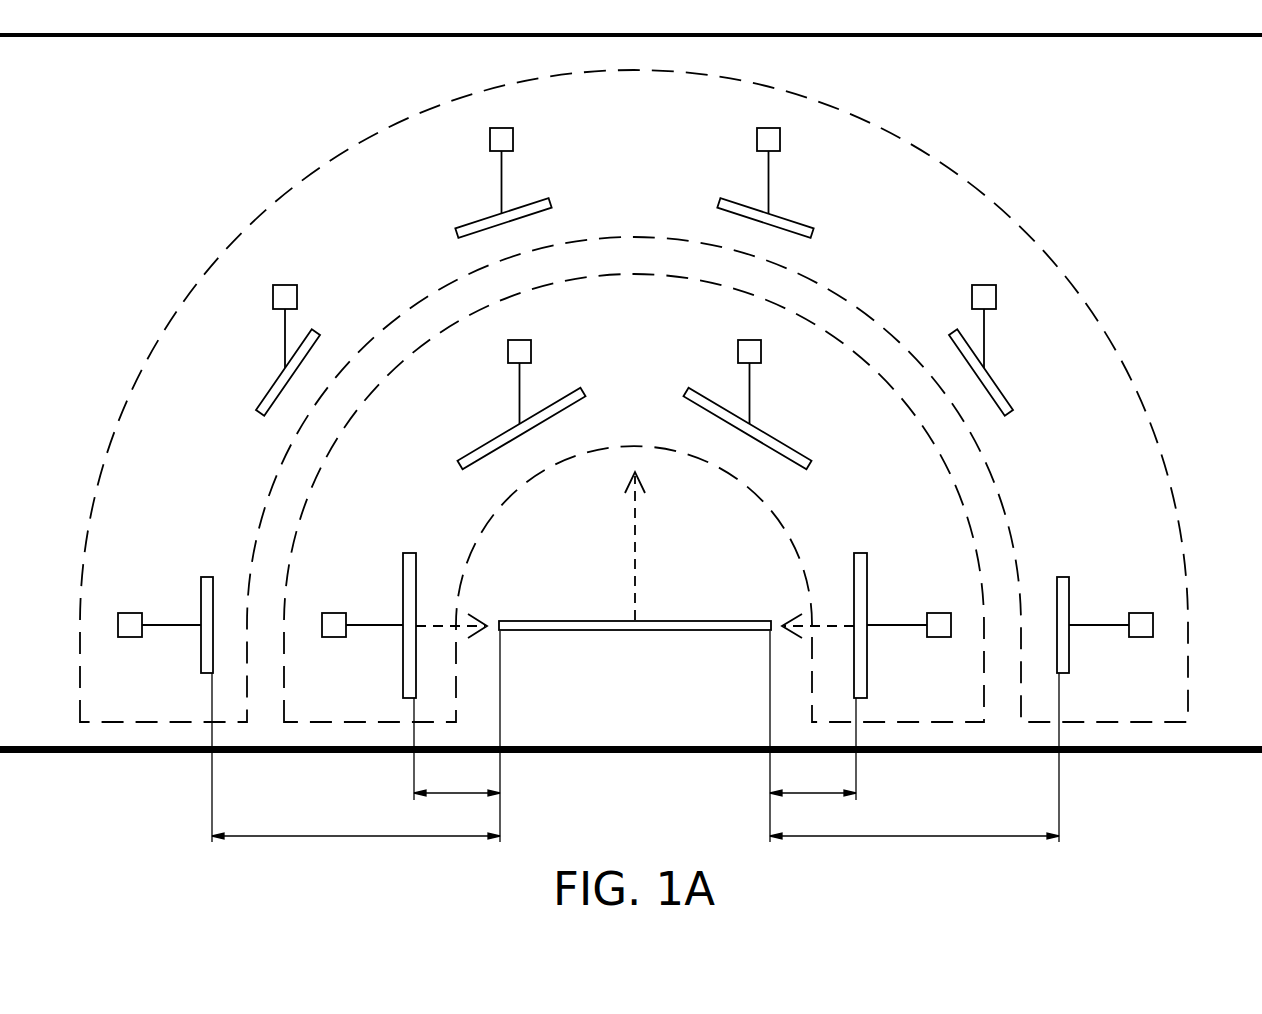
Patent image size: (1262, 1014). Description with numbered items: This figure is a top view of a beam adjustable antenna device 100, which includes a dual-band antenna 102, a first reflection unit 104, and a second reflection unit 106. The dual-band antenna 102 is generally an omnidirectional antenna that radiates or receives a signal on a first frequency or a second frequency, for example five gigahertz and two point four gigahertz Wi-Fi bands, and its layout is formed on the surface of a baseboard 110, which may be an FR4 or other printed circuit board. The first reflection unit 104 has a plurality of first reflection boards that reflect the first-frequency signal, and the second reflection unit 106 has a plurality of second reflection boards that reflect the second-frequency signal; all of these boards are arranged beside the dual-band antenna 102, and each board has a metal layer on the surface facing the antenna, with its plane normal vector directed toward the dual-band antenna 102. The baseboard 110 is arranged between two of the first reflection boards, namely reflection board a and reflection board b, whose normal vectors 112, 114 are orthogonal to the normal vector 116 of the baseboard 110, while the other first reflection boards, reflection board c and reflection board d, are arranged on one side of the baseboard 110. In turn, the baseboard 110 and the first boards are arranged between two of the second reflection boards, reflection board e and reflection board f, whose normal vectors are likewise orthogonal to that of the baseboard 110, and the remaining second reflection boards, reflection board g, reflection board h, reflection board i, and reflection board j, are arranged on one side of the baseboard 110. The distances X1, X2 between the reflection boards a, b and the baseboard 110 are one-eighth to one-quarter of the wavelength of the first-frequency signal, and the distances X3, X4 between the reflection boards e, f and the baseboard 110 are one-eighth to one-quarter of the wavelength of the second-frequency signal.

The beam adjustable antenna device 100 is at (58, 83).
The dual-band antenna 102 is at (640, 632).
The baseboard 110 is at (635, 660).
The first reflection unit 104 is at (975, 723).
The second reflection unit 106 is at (1168, 723).
The normal vector 112 is at (478, 618).
The normal vector 114 is at (793, 615).
The normal vector 116 is at (637, 557).
The reflection board a is at (409, 553).
The reflection board b is at (860, 553).
The reflection board c is at (585, 390).
The reflection board d is at (685, 390).
The reflection board e is at (207, 577).
The reflection board f is at (1062, 577).
The reflection board g is at (317, 333).
The reflection board h is at (952, 333).
The reflection board i is at (552, 200).
The reflection board j is at (718, 200).
The distance X1 is at (457, 776).
The distance X2 is at (813, 776).
The distance X3 is at (356, 819).
The distance X4 is at (914, 819).